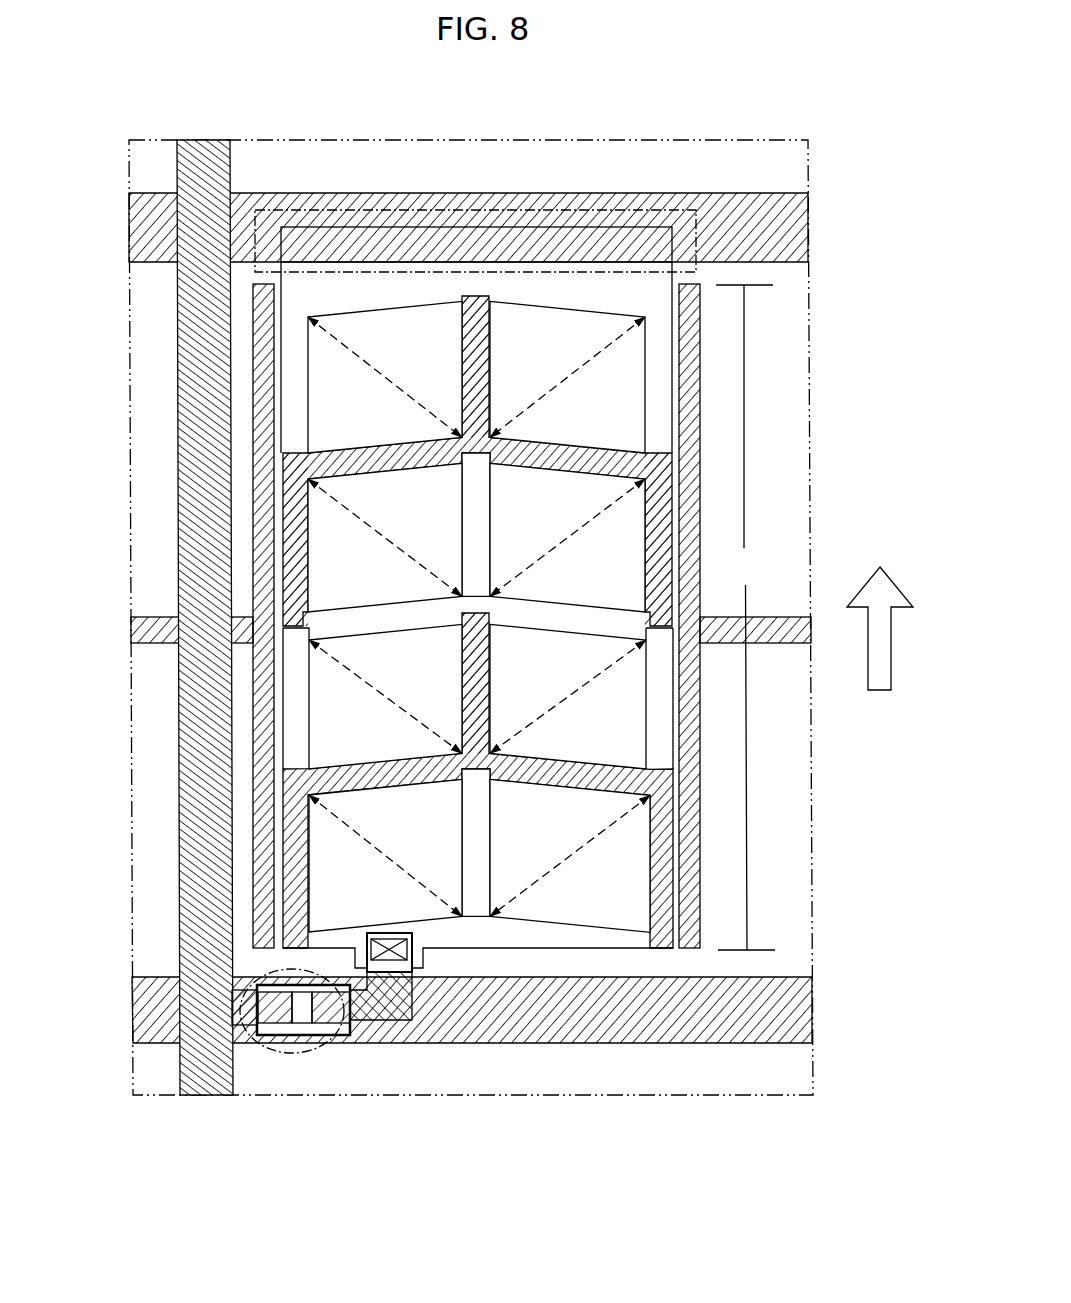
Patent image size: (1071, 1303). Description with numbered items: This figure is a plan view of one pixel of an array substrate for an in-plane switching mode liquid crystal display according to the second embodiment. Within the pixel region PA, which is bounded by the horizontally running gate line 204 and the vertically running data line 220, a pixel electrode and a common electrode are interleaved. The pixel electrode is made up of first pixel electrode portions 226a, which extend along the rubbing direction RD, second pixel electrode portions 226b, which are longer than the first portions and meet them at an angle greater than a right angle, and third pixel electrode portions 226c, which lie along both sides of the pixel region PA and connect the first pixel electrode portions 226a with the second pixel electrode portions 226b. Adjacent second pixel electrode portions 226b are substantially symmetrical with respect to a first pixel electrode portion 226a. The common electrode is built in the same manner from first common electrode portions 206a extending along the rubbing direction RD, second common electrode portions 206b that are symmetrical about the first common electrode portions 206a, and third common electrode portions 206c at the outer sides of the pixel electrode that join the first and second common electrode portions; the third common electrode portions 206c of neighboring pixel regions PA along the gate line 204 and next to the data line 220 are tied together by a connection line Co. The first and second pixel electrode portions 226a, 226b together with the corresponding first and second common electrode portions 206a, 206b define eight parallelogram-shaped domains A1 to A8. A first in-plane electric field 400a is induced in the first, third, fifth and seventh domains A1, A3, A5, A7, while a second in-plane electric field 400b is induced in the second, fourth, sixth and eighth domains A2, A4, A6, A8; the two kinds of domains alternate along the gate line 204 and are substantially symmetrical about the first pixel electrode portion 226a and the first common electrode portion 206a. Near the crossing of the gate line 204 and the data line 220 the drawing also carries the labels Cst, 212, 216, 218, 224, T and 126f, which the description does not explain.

The gate line 204 is at (820, 193).
The data line 220 is at (230, 112).
The connection line Co is at (132, 632).
The storage capacitor Cst is at (487, 208).
The gate electrode 212 is at (287, 1045).
The source electrode 216 is at (250, 1040).
The drain electrode 218 is at (380, 1043).
The contact hole 224 is at (380, 937).
The thin film transistor T is at (323, 1050).
The first pixel electrode portion 226a is at (298, 427).
The second pixel electrode portion 226b is at (582, 301).
The third pixel electrode portion 226c is at (302, 538).
The first common electrode portion 206a is at (312, 606).
The second common electrode portion 206b is at (410, 763).
The third common electrode portion 206c is at (268, 687).
The first in-plane electric field 400a is at (386, 386).
The second in-plane electric field 400b is at (590, 376).
The connecting portion of pixel electrode 126f is at (485, 935).
The pixel region PA is at (745, 617).
The rubbing direction RD is at (897, 628).
The first domain A1 is at (385, 377).
The second domain A2 is at (567, 377).
The third domain A3 is at (385, 537).
The fourth domain A4 is at (567, 537).
The fifth domain A5 is at (385, 696).
The sixth domain A6 is at (568, 696).
The seventh domain A7 is at (385, 855).
The eighth domain A8 is at (570, 855).